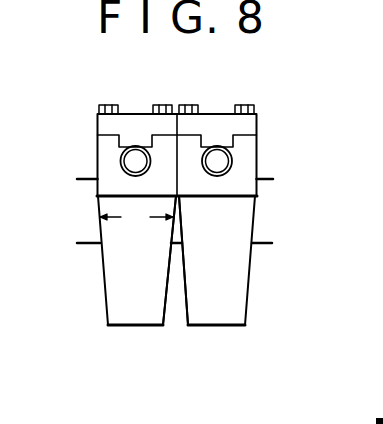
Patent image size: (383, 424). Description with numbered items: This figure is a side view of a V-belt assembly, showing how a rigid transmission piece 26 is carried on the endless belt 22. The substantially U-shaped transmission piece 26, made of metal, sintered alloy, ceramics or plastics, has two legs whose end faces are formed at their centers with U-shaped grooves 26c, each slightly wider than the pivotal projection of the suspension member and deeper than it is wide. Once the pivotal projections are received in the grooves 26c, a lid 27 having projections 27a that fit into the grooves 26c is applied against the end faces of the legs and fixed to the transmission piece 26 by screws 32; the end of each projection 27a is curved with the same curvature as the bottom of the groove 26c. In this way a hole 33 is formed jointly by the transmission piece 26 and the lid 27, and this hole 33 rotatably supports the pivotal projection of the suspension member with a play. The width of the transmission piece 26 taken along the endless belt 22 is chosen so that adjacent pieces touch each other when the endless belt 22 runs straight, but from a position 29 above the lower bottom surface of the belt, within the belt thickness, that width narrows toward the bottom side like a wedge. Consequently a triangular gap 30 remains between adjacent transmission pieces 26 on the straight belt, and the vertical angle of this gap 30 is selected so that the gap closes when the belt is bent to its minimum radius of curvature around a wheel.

The endless belt 22 is at (197, 298).
The transmission piece 26 is at (133, 315).
The U-shaped groove 26c is at (121, 166).
The lid 27 is at (249, 126).
The projection 27a is at (113, 128).
The position 29 is at (110, 196).
The triangular gap 30 is at (173, 307).
The screw 32 is at (110, 105).
The hole 33 is at (231, 167).